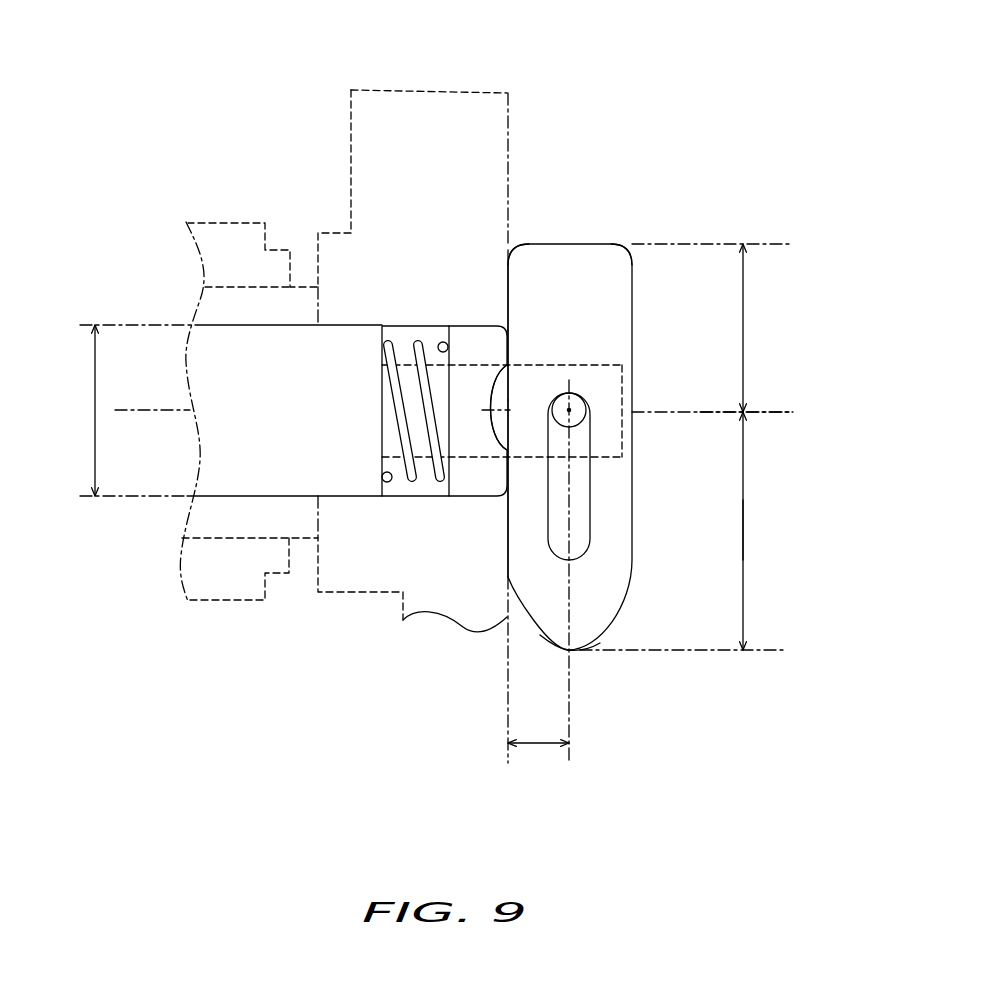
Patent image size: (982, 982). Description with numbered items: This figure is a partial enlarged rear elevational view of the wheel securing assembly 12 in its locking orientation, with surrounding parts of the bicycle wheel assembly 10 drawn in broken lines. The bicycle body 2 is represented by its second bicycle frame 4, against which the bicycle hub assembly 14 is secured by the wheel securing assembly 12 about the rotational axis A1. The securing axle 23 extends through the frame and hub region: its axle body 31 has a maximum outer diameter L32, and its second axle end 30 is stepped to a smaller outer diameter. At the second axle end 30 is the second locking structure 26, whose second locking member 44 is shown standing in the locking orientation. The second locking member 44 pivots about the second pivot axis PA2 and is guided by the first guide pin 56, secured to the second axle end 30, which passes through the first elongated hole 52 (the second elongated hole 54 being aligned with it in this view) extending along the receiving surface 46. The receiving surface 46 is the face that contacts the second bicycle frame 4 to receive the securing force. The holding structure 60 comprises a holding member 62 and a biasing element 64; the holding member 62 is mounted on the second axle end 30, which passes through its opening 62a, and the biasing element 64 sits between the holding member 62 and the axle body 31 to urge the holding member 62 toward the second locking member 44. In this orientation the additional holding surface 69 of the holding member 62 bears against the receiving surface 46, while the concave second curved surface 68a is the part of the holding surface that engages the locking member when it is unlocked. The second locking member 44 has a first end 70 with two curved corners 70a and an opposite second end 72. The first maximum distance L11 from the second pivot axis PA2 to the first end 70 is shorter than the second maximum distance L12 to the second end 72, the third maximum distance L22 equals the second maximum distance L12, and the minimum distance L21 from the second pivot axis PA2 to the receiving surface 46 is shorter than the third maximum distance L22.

The bicycle body 2 is at (343, 75).
The second bicycle frame 4 is at (350, 110).
The bicycle wheel assembly 10 is at (132, 118).
The wheel securing assembly 12 is at (727, 125).
The bicycle hub assembly 14 is at (218, 215).
The securing axle 23 is at (208, 318).
The second locking structure 26 is at (635, 130).
The second axle end 30 is at (580, 365).
The axle body 31 is at (233, 340).
The second locking member 44 is at (638, 282).
The receiving surface 46 is at (508, 288).
The first elongated hole 52 is at (584, 485).
The second elongated hole 54 is at (569, 476).
The first guide pin 56 is at (575, 426).
The holding structure 60 is at (422, 524).
The holding member 62 is at (462, 485).
The opening 62a is at (473, 457).
The biasing element 64 is at (403, 480).
The second curved surface 68a is at (547, 385).
The additional holding surface 69 is at (510, 350).
The first end 70 is at (579, 243).
The curved corners 70a is at (515, 245).
The second end 72 is at (577, 653).
The second pivot axis PA2 is at (569, 393).
The rotational axis A1 is at (754, 412).
The first maximum distance L11 is at (743, 323).
The second maximum distance L12 is at (743, 537).
The minimum distance L21 is at (543, 743).
The third maximum distance L22 is at (776, 530).
The maximum outer diameter L32 is at (93, 400).